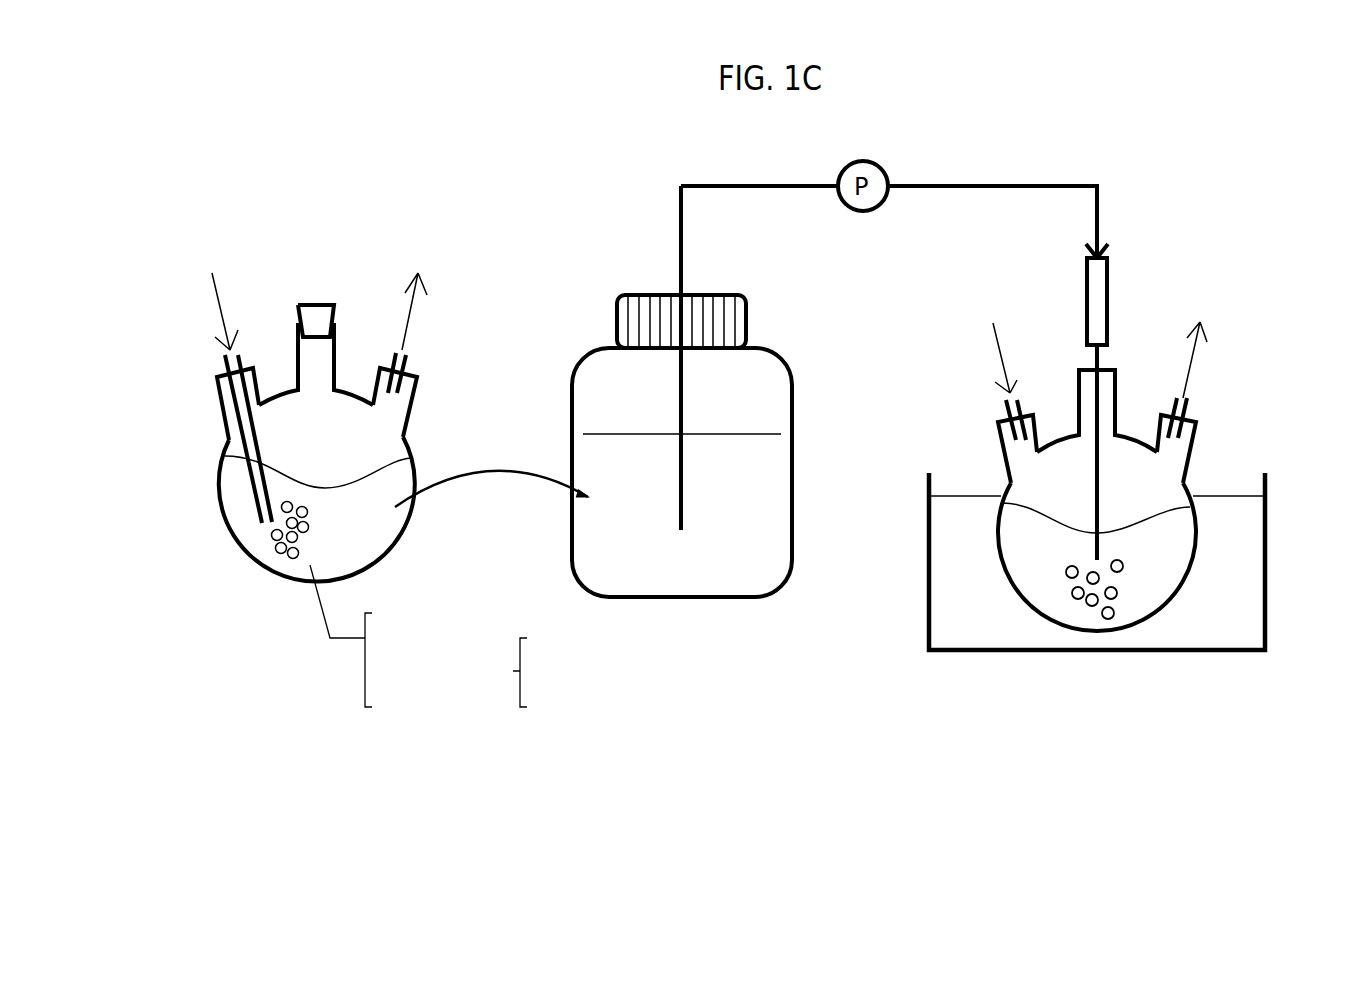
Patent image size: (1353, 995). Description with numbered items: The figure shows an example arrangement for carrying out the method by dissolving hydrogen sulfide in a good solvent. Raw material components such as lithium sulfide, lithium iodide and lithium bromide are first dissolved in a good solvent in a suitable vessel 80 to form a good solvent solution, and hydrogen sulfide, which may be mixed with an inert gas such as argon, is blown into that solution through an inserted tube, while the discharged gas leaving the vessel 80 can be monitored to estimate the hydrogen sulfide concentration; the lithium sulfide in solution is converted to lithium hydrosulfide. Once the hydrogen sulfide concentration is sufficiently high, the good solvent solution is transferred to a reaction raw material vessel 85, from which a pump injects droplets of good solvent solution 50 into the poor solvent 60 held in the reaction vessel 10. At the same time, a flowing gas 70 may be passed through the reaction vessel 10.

The reaction vessel 10 is at (1000, 518).
The droplets of good solvent solution 50 is at (1122, 562).
The poor solvent 60 is at (1153, 585).
The flowing gas 70 is at (992, 338).
The vessel 80 is at (226, 530).
The reaction raw material vessel 85 is at (670, 597).